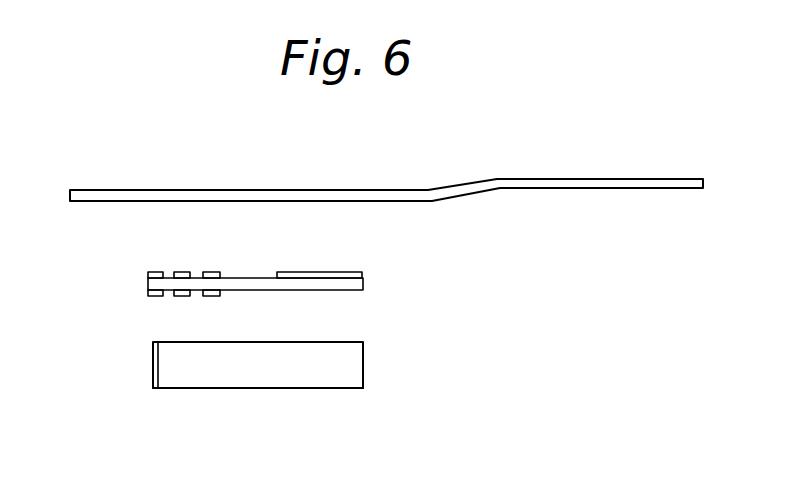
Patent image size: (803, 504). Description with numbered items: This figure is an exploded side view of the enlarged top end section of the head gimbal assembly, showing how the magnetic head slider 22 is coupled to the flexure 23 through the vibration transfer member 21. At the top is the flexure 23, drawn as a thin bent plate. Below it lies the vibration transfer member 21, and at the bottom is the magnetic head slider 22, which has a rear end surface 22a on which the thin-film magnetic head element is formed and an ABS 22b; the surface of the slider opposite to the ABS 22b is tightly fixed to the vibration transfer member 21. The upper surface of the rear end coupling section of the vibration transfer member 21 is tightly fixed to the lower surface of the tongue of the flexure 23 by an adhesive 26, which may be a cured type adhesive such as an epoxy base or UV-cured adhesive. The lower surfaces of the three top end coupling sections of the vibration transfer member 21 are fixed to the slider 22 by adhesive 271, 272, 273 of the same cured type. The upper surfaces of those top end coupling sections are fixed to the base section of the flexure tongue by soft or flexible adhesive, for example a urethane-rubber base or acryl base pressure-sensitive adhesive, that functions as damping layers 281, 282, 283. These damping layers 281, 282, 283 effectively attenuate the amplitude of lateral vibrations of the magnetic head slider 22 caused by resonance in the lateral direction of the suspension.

The flexure 23 is at (630, 178).
The vibration transfer member 21 is at (363, 284).
The adhesive 26 is at (322, 272).
The damping layer 281 is at (150, 272).
The damping layer 282 is at (178, 272).
The damping layer 283 is at (243, 250).
The adhesive 271 is at (155, 296).
The adhesive 272 is at (178, 296).
The adhesive 273 is at (213, 296).
The magnetic head slider 22 is at (355, 370).
The rear end surface 22a is at (153, 372).
The ABS 22b is at (262, 388).